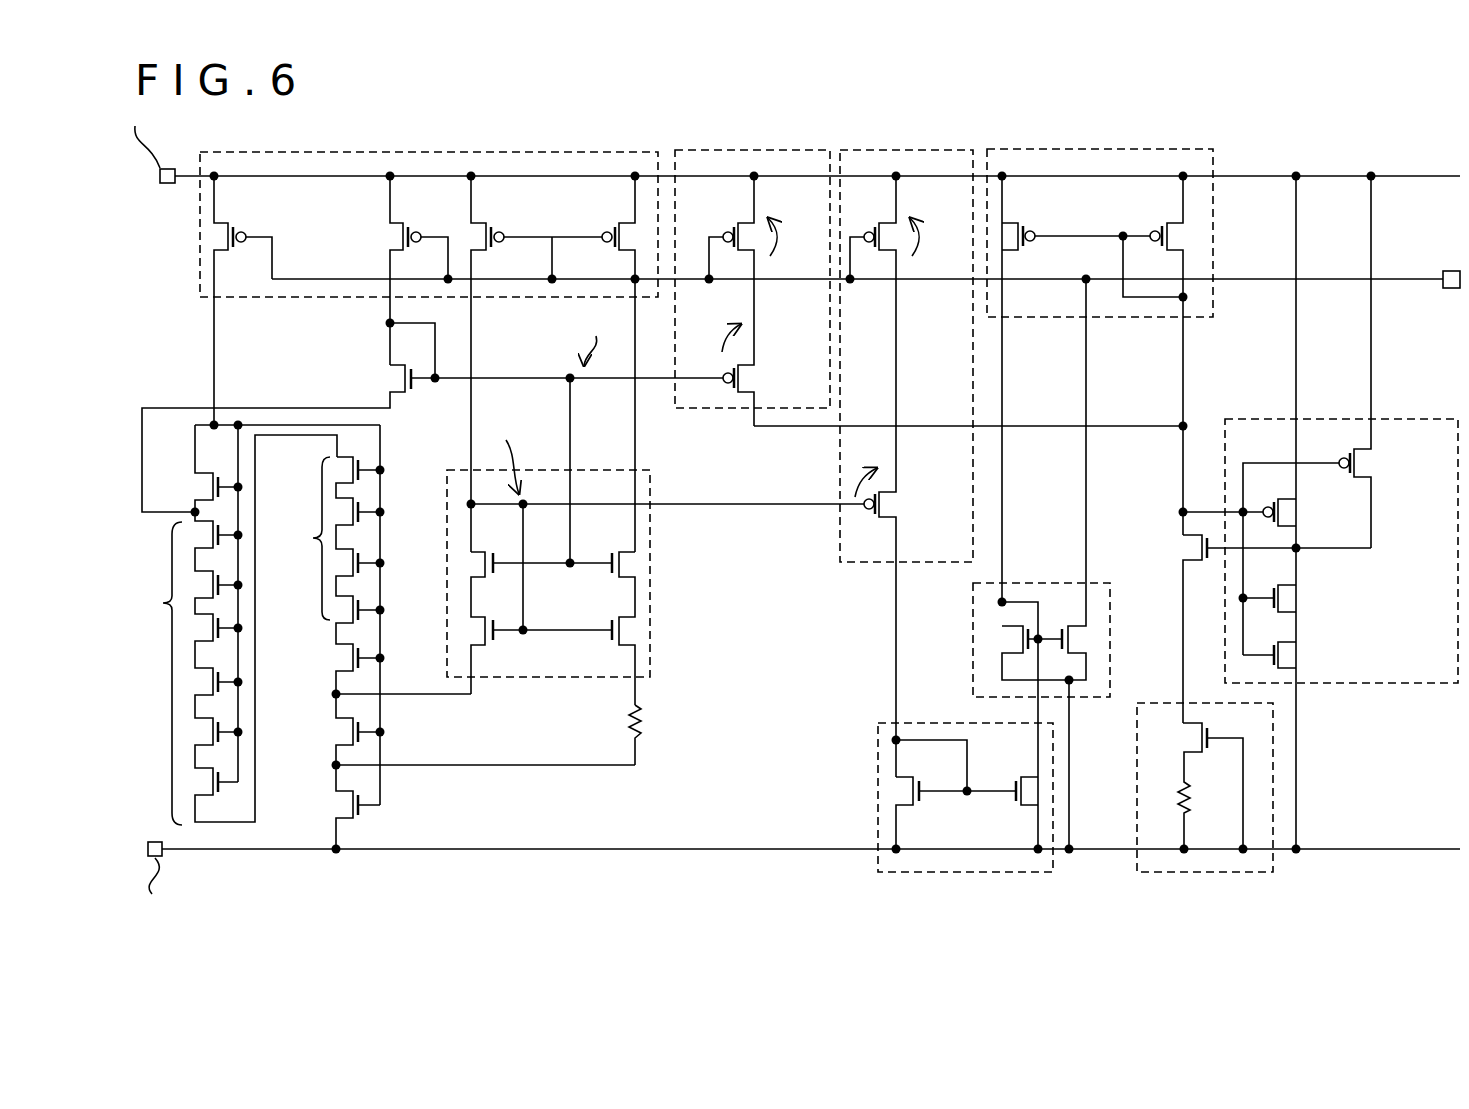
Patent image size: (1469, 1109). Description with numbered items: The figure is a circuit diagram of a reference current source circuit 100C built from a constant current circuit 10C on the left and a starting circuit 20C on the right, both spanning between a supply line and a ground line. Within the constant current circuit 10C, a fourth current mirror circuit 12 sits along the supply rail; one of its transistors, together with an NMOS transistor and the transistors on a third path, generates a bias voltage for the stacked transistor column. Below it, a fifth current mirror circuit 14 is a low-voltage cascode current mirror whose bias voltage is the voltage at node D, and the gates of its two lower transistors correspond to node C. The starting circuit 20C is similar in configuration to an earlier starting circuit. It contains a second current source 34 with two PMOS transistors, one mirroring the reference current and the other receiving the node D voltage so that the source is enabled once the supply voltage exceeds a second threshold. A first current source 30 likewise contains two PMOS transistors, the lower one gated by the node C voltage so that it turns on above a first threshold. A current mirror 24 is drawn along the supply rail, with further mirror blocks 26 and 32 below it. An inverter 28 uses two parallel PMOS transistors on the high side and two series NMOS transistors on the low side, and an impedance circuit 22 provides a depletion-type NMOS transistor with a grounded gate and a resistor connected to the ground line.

The reference current source circuit 100C is at (1412, 98).
The constant current circuit 10C is at (675, 885).
The starting circuit 20C is at (1460, 885).
The fourth current mirror circuit 12 is at (527, 152).
The fifth current mirror circuit 14 is at (650, 630).
The impedance circuit 22 is at (1137, 775).
The current mirror 24 is at (1144, 149).
The current mirror 26 is at (1110, 625).
The inverter 28 is at (1396, 419).
The first current source 30 is at (950, 150).
The current mirror 32 is at (879, 803).
The second current source 34 is at (790, 150).